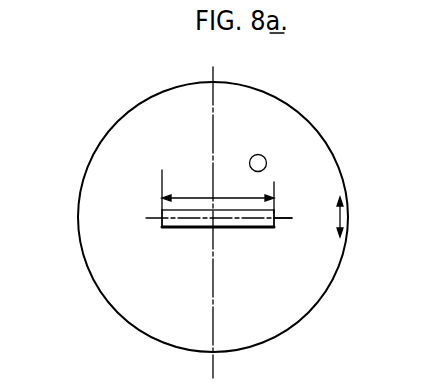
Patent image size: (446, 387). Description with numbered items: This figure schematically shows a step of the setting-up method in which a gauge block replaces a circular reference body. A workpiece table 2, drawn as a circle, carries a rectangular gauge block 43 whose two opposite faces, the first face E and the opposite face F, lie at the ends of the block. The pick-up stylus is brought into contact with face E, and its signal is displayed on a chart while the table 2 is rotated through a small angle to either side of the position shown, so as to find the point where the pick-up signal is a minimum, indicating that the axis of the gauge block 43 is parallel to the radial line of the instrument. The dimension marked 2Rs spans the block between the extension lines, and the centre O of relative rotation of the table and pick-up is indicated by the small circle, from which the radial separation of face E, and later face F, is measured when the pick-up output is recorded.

The workpiece table 2 is at (84, 175).
The spacing dimension 2Rs is at (179, 198).
The rectangular gauge block 43 is at (208, 223).
The opposite face F is at (160, 222).
The first face E is at (274, 227).
The centre of relative rotation O is at (213, 218).